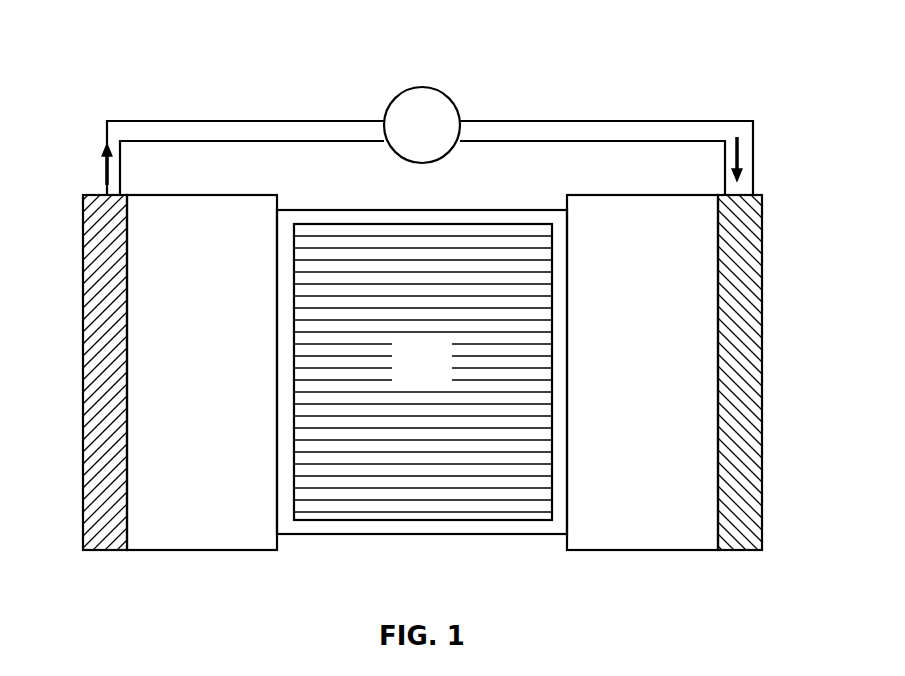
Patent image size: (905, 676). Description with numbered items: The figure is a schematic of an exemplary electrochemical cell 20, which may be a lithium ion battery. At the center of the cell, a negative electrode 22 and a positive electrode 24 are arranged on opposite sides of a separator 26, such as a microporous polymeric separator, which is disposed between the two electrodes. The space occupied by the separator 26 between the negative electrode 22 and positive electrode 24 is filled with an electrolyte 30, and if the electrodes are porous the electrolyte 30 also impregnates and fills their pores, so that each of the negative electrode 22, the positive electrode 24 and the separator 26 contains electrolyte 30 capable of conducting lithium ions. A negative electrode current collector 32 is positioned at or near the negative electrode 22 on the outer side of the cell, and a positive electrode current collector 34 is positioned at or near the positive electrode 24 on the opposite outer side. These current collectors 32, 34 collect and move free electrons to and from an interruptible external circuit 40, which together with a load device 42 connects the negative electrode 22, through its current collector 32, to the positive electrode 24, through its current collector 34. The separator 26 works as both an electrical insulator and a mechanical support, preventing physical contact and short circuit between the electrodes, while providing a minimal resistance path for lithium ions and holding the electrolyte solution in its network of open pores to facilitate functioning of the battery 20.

The electrochemical cell 20 is at (95, 72).
The negative electrode 22 is at (186, 345).
The positive electrode 24 is at (631, 341).
The separator 26 is at (420, 536).
The electrolyte 30 is at (410, 373).
The negative electrode current collector 32 is at (83, 273).
The positive electrode current collector 34 is at (762, 268).
The external circuit 40 is at (240, 118).
The load device 42 is at (410, 138).